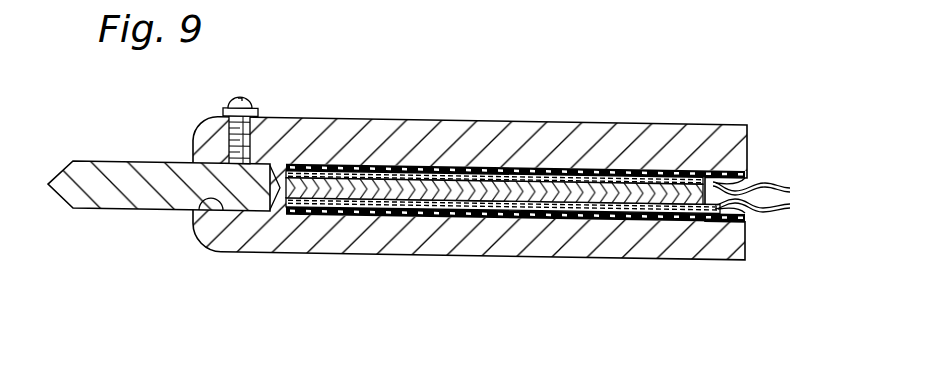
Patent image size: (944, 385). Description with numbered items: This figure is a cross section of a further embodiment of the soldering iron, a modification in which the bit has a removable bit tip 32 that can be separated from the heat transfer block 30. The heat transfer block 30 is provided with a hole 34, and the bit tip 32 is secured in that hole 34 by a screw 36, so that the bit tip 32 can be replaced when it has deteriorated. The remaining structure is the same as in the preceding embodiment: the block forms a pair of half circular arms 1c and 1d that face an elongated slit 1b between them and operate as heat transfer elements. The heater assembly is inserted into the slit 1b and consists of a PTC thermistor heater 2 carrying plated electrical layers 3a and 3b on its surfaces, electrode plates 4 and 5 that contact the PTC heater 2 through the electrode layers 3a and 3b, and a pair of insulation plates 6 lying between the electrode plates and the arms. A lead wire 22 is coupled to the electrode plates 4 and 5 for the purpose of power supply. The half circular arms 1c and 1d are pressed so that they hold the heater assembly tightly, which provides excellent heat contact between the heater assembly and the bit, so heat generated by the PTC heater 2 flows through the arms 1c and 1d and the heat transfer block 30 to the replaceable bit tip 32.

The heat transfer block 30 is at (378, 118).
The half circular arm 1c is at (737, 143).
The half circular arm 1d is at (747, 260).
The elongated slit 1b is at (743, 180).
The lead wire 22 is at (774, 213).
The removable bit tip 32 is at (149, 162).
The hole 34 is at (198, 211).
The screw 36 is at (246, 101).
The PTC thermistor heater 2 is at (323, 187).
The plated electrical layer 3a is at (398, 170).
The plated electrical layer 3b is at (368, 213).
The electrode plate 4 is at (568, 175).
The electrode plate 5 is at (534, 217).
The insulation plate 6 is at (492, 173).